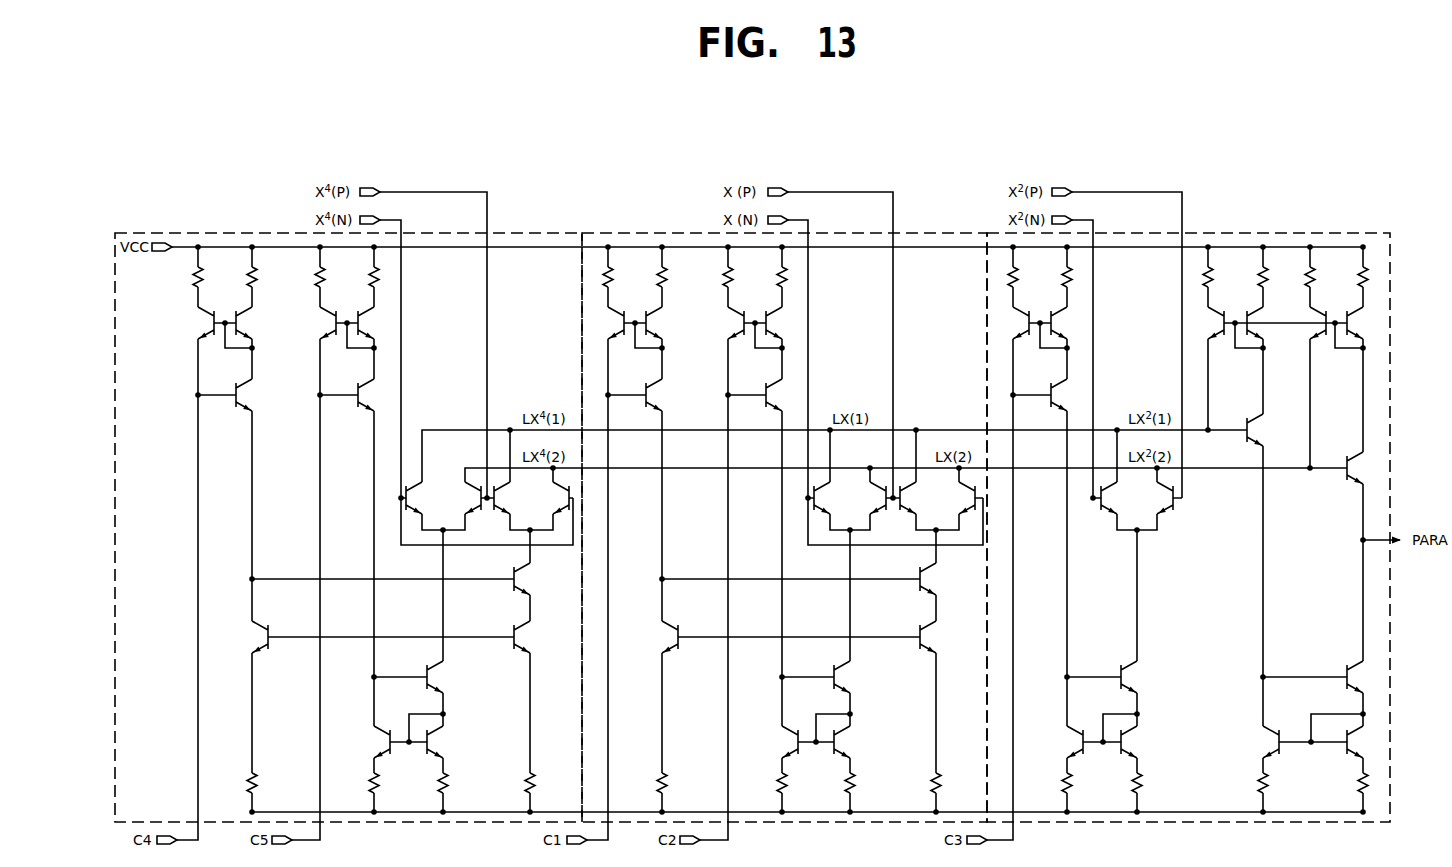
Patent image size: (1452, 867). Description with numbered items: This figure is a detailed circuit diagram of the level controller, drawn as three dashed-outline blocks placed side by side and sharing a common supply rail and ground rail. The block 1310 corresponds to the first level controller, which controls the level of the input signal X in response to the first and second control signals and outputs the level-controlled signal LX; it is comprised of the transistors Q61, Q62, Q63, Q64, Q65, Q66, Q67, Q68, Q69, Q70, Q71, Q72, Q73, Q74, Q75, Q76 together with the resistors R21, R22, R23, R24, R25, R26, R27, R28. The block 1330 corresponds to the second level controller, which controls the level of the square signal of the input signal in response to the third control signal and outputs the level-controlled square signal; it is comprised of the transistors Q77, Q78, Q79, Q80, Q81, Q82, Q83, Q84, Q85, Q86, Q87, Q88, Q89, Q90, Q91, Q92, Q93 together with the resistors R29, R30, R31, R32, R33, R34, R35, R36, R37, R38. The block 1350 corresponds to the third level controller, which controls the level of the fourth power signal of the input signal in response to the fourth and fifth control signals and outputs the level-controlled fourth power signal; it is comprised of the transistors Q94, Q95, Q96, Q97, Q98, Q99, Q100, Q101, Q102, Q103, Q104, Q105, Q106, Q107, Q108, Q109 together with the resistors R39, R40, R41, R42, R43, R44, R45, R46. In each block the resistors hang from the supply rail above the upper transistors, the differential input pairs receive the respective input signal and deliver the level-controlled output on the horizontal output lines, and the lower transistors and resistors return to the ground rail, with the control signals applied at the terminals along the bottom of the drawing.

The block 1350 is at (268, 233).
The block 1310 is at (657, 233).
The block 1330 is at (1277, 233).
The transistor Q61 is at (604, 323).
The transistor Q62 is at (665, 323).
The transistor Q63 is at (724, 323).
The transistor Q64 is at (785, 323).
The transistor Q65 is at (665, 395).
The transistor Q66 is at (785, 395).
The transistor Q67 is at (828, 498).
The transistor Q68 is at (871, 498).
The transistor Q69 is at (914, 498).
The transistor Q70 is at (960, 498).
The transistor Q71 is at (939, 579).
The transistor Q72 is at (659, 637).
The transistor Q73 is at (939, 637).
The transistor Q74 is at (853, 677).
The transistor Q75 is at (779, 742).
The transistor Q76 is at (853, 742).
The transistor Q77 is at (1009, 323).
The transistor Q78 is at (1070, 323).
The transistor Q79 is at (1204, 323).
The transistor Q80 is at (1266, 322).
The transistor Q81 is at (1301, 326).
The transistor Q82 is at (1366, 323).
The transistor Q83 is at (1070, 395).
The transistor Q84 is at (1266, 430).
The transistor Q85 is at (1366, 468).
The transistor Q86 is at (1115, 498).
The transistor Q87 is at (1158, 498).
The transistor Q88 is at (1140, 677).
The transistor Q89 is at (1366, 677).
The transistor Q90 is at (1064, 742).
The transistor Q91 is at (1140, 742).
The transistor Q92 is at (1260, 742).
The transistor Q93 is at (1366, 742).
The transistor Q94 is at (194, 323).
The transistor Q95 is at (255, 323).
The transistor Q96 is at (316, 323).
The transistor Q97 is at (377, 323).
The transistor Q98 is at (255, 395).
The transistor Q99 is at (377, 395).
The transistor Q100 is at (424, 498).
The transistor Q101 is at (462, 498).
The transistor Q102 is at (512, 498).
The transistor Q103 is at (550, 498).
The transistor Q104 is at (538, 579).
The transistor Q105 is at (245, 637).
The transistor Q106 is at (538, 637).
The transistor Q107 is at (451, 677).
The transistor Q108 is at (367, 742).
The transistor Q109 is at (451, 742).
The resistor R21 is at (599, 277).
The resistor R22 is at (653, 277).
The resistor R23 is at (719, 277).
The resistor R24 is at (773, 277).
The resistor R25 is at (653, 783).
The resistor R26 is at (773, 783).
The resistor R27 is at (841, 783).
The resistor R28 is at (927, 783).
The resistor R29 is at (1004, 277).
The resistor R30 is at (1058, 277).
The resistor R31 is at (1199, 277).
The resistor R32 is at (1254, 277).
The resistor R33 is at (1301, 277).
The resistor R34 is at (1354, 277).
The resistor R35 is at (1058, 783).
The resistor R36 is at (1128, 783).
The resistor R37 is at (1254, 783).
The resistor R38 is at (1354, 783).
The resistor R39 is at (189, 277).
The resistor R40 is at (243, 277).
The resistor R41 is at (311, 277).
The resistor R42 is at (365, 277).
The resistor R43 is at (243, 783).
The resistor R44 is at (365, 783).
The resistor R45 is at (434, 783).
The resistor R46 is at (521, 783).